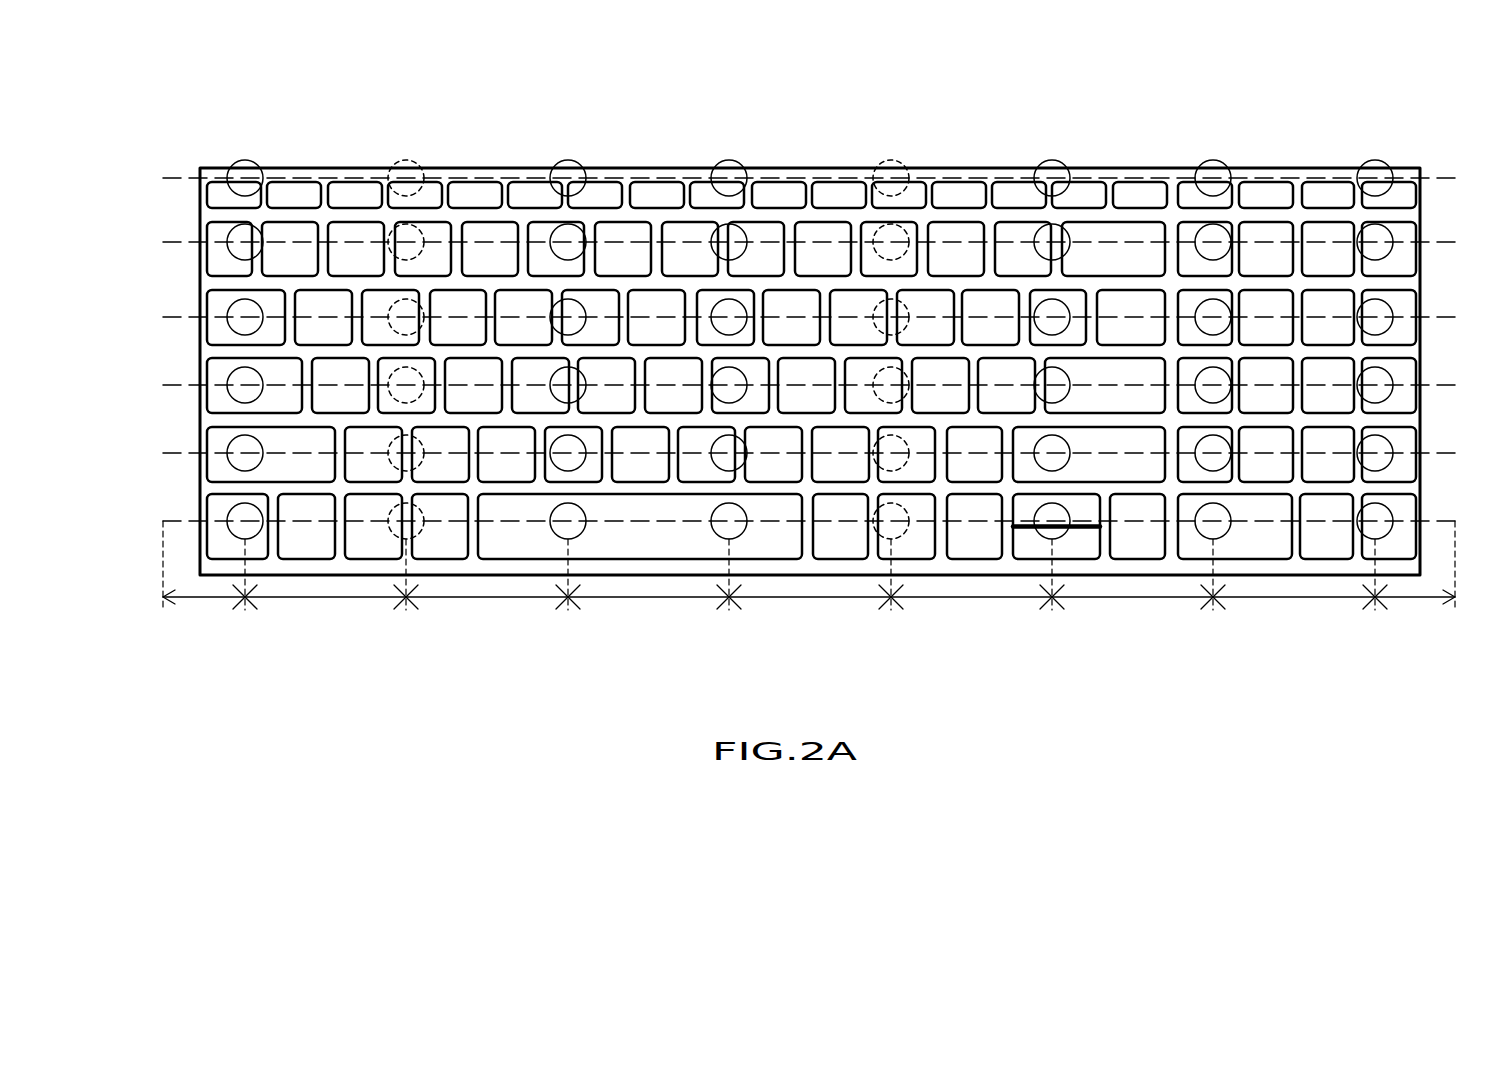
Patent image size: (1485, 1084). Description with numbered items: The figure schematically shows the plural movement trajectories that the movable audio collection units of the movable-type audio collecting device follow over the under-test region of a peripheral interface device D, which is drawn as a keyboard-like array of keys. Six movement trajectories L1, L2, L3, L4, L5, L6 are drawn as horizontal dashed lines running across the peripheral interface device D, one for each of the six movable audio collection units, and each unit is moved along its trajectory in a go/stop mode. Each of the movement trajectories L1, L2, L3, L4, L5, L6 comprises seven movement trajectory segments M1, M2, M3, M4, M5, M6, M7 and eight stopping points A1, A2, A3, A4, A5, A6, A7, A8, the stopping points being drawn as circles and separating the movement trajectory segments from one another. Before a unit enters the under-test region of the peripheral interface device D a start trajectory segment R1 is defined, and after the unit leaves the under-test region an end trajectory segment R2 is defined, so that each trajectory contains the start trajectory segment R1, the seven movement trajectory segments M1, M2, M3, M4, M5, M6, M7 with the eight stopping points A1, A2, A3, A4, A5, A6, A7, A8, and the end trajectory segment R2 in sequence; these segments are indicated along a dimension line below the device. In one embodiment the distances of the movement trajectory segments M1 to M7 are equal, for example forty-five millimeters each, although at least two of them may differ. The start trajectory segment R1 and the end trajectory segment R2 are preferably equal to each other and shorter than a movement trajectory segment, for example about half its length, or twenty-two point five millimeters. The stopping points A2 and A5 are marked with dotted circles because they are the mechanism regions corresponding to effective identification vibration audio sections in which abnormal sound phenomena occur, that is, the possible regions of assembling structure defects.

The peripheral interface device D is at (635, 168).
The movement trajectory L1 is at (187, 166).
The movement trajectory L2 is at (187, 230).
The movement trajectory L3 is at (187, 305).
The movement trajectory L4 is at (187, 373).
The movement trajectory L5 is at (187, 441).
The movement trajectory L6 is at (187, 509).
The stopping point A1 is at (252, 148).
The stopping point A2 is at (413, 148).
The stopping point A3 is at (575, 148).
The stopping point A4 is at (722, 148).
The stopping point A5 is at (884, 148).
The stopping point A6 is at (1045, 148).
The stopping point A7 is at (1206, 148).
The stopping point A8 is at (1368, 148).
The movement trajectory segment M1 is at (323, 597).
The movement trajectory segment M2 is at (480, 597).
The movement trajectory segment M3 is at (653, 597).
The movement trajectory segment M4 is at (813, 597).
The movement trajectory segment M5 is at (975, 597).
The movement trajectory segment M6 is at (1136, 597).
The movement trajectory segment M7 is at (1297, 597).
The start trajectory segment R1 is at (200, 597).
The end trajectory segment R2 is at (1408, 597).